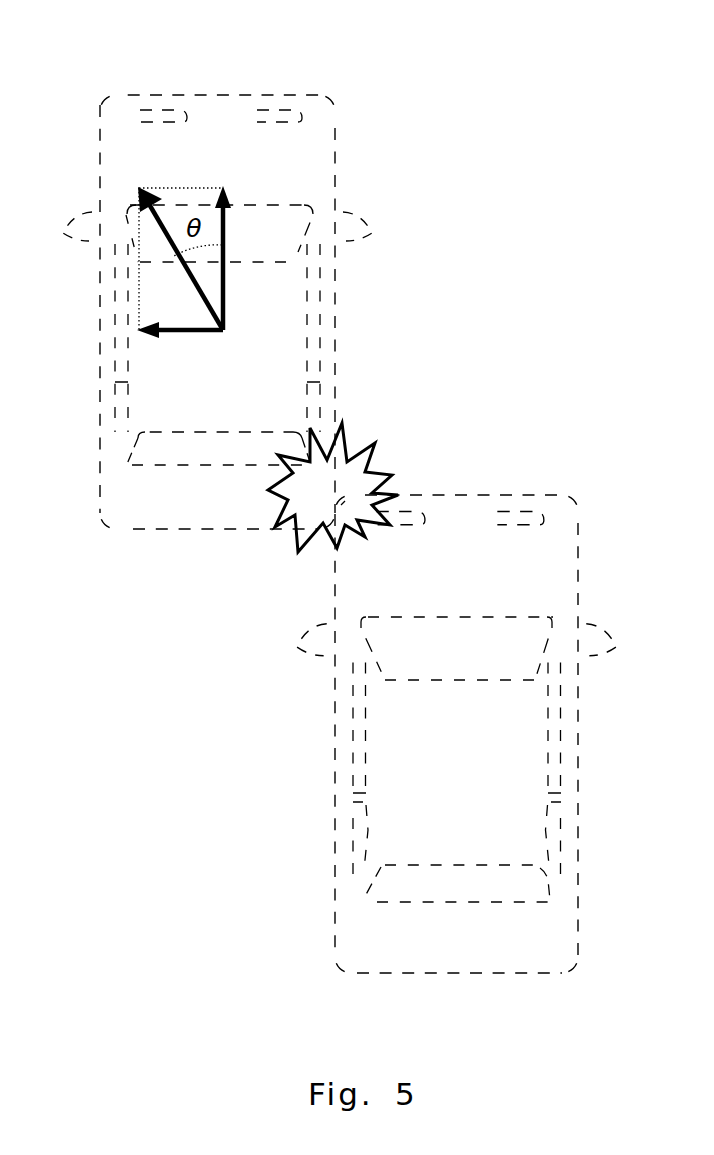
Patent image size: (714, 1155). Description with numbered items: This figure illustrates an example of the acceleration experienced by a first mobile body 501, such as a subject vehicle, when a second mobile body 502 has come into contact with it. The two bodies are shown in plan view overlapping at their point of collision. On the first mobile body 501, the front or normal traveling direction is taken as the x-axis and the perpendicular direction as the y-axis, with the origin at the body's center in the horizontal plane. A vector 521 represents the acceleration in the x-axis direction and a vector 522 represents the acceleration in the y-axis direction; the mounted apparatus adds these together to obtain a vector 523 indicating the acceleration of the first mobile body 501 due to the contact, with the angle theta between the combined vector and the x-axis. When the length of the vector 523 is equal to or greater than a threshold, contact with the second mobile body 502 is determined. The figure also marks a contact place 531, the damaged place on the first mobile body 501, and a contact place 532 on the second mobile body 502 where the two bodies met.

The first mobile body 501 is at (302, 95).
The second mobile body 502 is at (532, 495).
The vector of the acceleration in the x-axis direction 521 is at (228, 187).
The vector of the acceleration in the y-axis direction 522 is at (137, 330).
The vector indicating acceleration of the first mobile body due to its contact 523 is at (138, 188).
The contact place in the first mobile body 531 is at (333, 512).
The contact place in the second mobile body 532 is at (343, 503).